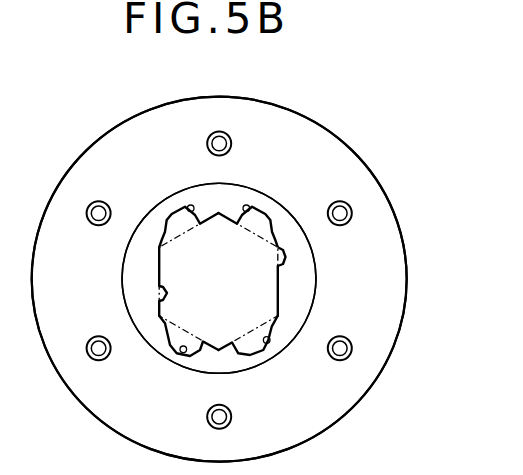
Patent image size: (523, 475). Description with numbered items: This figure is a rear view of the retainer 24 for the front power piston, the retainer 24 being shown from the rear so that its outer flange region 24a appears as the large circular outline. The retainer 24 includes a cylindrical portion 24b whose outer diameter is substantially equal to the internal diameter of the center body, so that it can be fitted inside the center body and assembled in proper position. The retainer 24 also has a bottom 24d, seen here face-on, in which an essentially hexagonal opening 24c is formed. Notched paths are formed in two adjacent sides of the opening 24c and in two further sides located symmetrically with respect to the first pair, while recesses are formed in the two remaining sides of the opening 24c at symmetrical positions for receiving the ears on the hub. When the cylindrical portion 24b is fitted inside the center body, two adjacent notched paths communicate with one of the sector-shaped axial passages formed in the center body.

The retainer 24 is at (397, 372).
The flange portion 24a is at (282, 108).
The cylindrical portion 24b is at (315, 260).
The hexagonal opening 24c is at (250, 330).
The bottom 24d is at (298, 290).